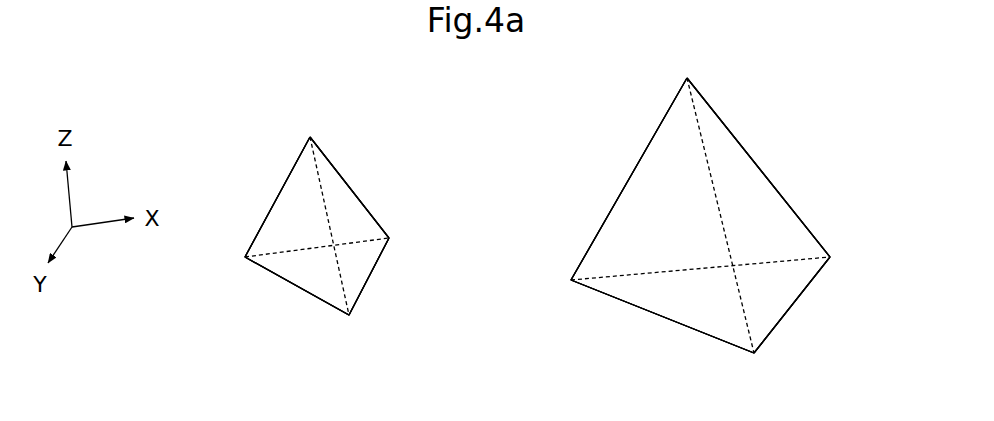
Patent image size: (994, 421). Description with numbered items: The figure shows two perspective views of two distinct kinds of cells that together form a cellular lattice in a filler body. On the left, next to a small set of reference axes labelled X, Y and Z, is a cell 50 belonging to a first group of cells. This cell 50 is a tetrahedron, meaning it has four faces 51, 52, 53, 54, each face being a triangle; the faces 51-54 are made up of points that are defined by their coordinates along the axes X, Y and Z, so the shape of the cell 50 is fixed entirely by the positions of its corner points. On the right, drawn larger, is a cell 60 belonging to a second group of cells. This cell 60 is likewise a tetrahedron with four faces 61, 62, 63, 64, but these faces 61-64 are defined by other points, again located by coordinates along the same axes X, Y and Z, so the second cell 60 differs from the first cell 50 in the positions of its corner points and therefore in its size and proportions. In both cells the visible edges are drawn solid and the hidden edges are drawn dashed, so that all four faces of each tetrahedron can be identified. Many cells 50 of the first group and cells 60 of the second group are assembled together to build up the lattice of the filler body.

The cell 50 is at (208, 232).
The face 51 is at (276, 166).
The face 52 is at (348, 202).
The face 53 is at (390, 289).
The face 54 is at (339, 143).
The cell 60 is at (774, 143).
The face 61 is at (650, 102).
The face 62 is at (780, 288).
The face 63 is at (657, 324).
The face 64 is at (717, 83).